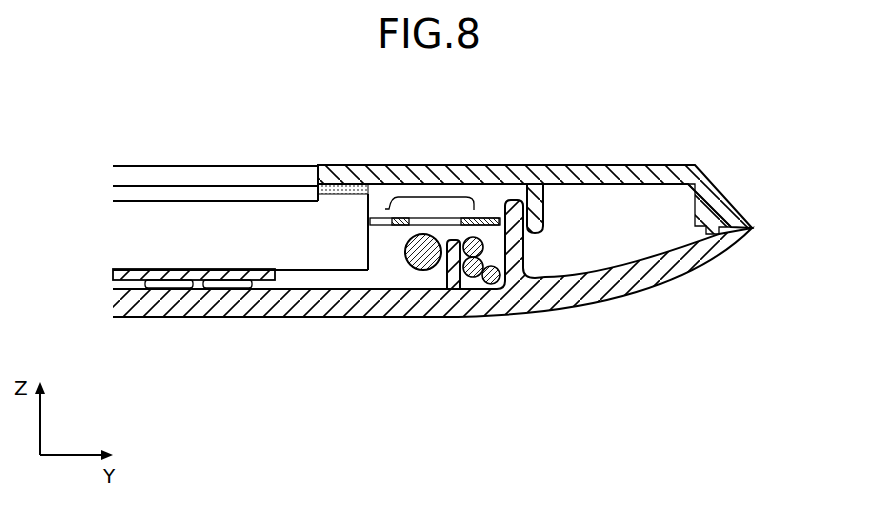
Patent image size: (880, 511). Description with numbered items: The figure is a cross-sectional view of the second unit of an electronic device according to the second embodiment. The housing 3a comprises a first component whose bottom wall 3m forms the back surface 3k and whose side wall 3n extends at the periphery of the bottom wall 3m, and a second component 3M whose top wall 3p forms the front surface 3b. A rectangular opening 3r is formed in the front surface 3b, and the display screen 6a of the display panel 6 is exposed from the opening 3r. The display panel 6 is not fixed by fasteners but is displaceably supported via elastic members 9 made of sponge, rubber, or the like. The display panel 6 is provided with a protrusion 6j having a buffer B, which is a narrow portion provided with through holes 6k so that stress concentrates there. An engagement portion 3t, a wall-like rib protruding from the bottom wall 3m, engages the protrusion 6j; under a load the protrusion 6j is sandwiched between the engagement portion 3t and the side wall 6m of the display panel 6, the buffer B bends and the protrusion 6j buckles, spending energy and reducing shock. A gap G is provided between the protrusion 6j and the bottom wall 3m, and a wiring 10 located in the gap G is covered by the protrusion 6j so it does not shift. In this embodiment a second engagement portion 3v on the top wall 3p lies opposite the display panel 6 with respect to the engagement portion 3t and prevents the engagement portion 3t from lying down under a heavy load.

The display panel 6 is at (132, 190).
The display screen 6a is at (208, 200).
The opening 3r is at (318, 177).
The elastic members 9 is at (343, 191).
The side wall 6m is at (385, 208).
The through holes 6k is at (412, 218).
The buffer B is at (488, 206).
The protrusion 6j is at (476, 216).
The engagement portion 3t is at (510, 205).
The second engagement portion 3v is at (541, 213).
The front surface 3b is at (600, 165).
The top wall 3p is at (640, 165).
The second component 3M is at (679, 155).
The side wall 3n is at (752, 235).
The housing 3a is at (654, 298).
The bottom wall 3m is at (196, 292).
The back surface 3k is at (248, 289).
The wiring 10 is at (414, 268).
The gap G is at (433, 283).